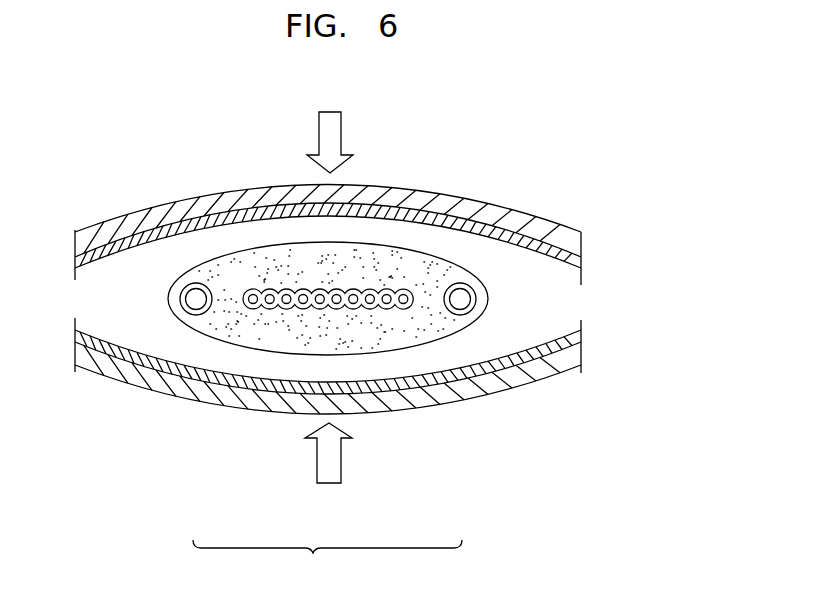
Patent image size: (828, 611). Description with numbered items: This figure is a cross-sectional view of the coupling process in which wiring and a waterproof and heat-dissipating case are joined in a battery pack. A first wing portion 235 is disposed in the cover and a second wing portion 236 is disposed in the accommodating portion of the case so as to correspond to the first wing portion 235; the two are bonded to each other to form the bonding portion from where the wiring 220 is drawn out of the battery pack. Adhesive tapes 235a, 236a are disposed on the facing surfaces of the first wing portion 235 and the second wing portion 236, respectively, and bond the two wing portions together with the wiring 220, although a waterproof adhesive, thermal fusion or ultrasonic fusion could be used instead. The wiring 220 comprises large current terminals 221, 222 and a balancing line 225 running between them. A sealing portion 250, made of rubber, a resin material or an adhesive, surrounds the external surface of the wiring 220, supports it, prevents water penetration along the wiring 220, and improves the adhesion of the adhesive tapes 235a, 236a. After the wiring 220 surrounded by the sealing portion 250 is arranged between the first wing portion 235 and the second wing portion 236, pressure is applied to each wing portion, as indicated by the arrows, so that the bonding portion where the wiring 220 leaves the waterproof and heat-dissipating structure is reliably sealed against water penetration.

The first wing portion 235 is at (582, 249).
The adhesive tape 235a is at (582, 265).
The adhesive tape 236a is at (582, 337).
The second wing portion 236 is at (582, 358).
The sealing portion 250 is at (230, 265).
The large current terminal 221 is at (197, 315).
The large current terminal 222 is at (458, 316).
The balancing line 225 is at (287, 310).
The wiring 220 is at (327, 560).